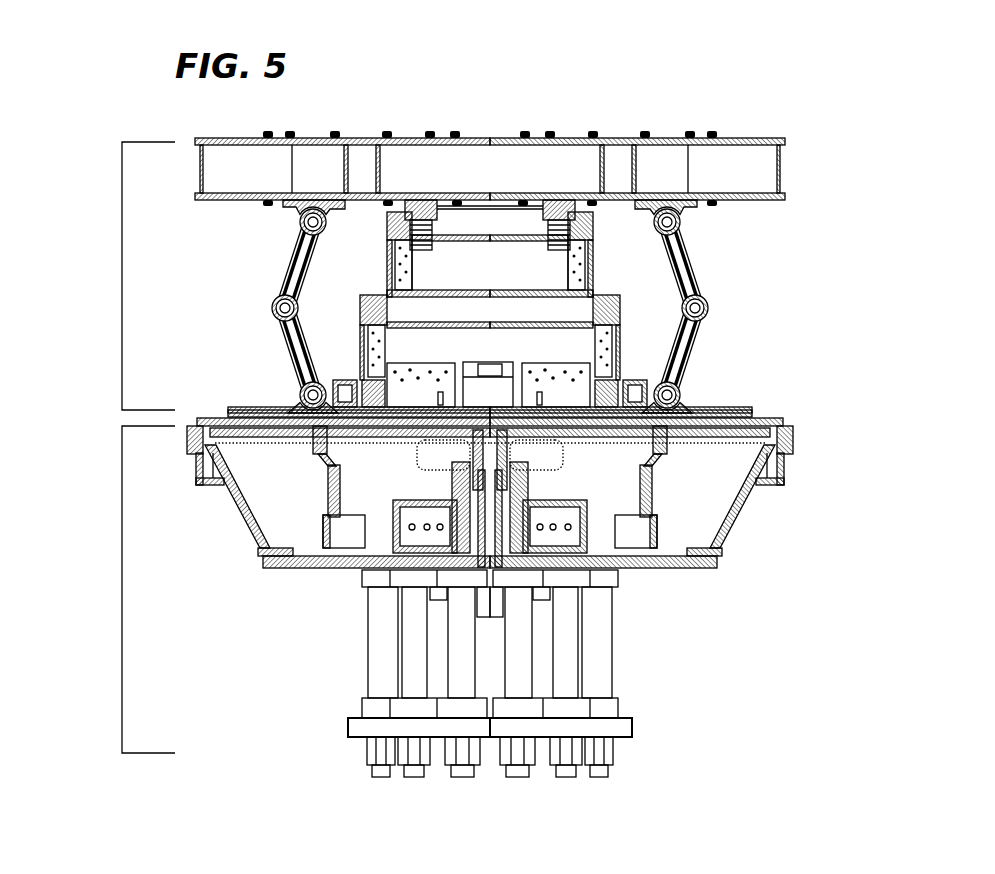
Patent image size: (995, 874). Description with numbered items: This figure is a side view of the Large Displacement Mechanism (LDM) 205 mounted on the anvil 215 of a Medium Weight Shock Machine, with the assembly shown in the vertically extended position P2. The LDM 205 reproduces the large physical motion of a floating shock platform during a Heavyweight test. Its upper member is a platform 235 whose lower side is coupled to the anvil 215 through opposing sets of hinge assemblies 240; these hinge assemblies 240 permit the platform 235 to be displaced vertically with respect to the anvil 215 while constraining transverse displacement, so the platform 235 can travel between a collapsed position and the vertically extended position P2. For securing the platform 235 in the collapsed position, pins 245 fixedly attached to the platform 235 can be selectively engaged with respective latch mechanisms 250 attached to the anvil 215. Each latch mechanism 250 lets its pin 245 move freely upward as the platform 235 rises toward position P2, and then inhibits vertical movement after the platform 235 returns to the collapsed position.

The Large Displacement Mechanism (LDM) 205 is at (122, 228).
The anvil 215 is at (122, 584).
The platform 235 is at (428, 160).
The hinge assemblies 240 is at (548, 308).
The pins 245 is at (572, 222).
The latch mechanism 250 is at (547, 392).
The vertically extended position P2 is at (755, 105).